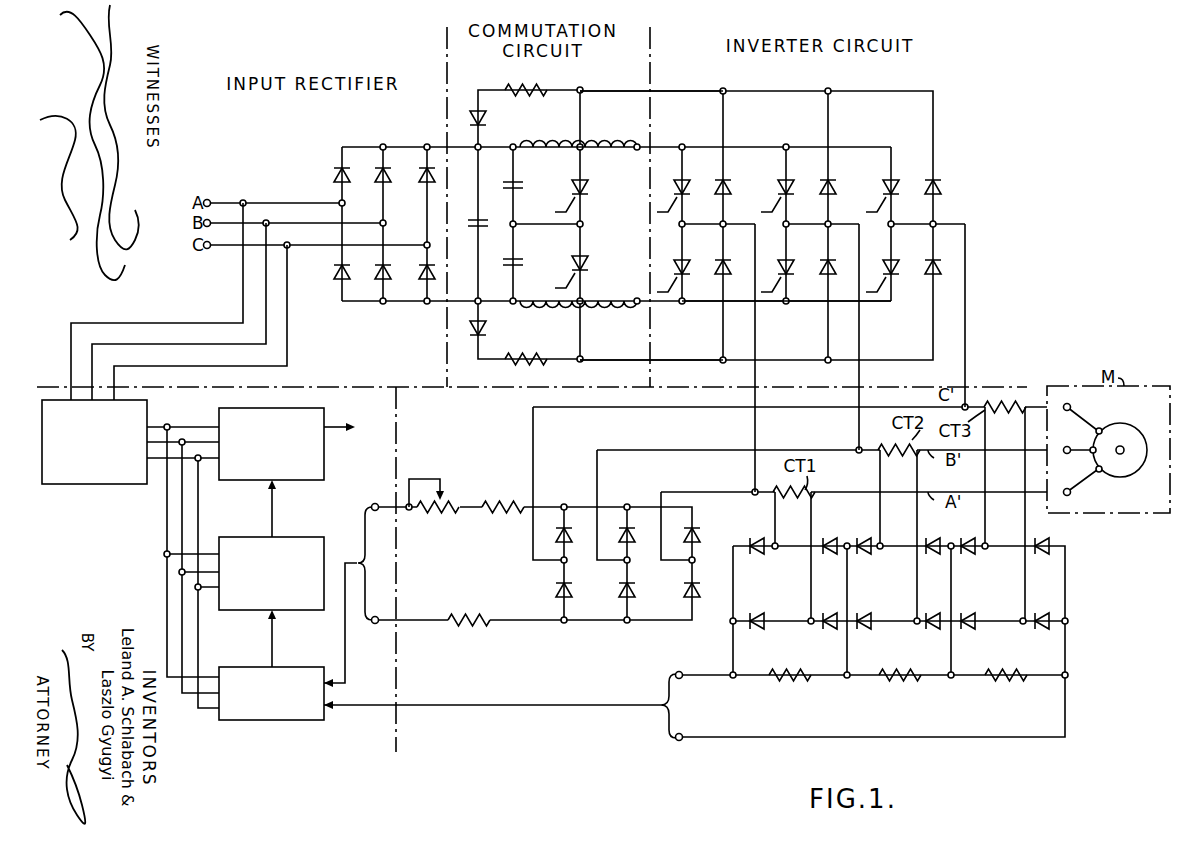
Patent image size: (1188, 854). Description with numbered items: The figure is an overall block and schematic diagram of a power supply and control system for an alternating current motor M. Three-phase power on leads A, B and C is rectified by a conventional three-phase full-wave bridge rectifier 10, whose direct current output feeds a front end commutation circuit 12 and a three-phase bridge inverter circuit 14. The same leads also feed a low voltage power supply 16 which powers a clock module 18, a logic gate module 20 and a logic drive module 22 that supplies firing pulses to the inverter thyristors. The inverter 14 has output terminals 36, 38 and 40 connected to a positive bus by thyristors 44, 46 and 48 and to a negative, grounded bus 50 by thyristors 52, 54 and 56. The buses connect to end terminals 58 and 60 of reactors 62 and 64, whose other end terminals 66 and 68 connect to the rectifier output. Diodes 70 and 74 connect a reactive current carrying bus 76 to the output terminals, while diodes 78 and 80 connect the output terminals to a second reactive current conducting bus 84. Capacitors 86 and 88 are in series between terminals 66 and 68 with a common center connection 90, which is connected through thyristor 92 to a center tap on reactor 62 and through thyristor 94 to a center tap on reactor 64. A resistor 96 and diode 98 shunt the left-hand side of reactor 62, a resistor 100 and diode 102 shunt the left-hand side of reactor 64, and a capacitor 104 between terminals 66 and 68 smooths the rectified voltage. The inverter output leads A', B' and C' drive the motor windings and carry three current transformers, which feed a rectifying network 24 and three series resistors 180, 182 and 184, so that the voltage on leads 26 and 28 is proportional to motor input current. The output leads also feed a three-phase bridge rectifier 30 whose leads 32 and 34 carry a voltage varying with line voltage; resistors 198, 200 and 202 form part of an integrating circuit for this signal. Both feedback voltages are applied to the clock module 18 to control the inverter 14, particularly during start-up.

The three-phase full-wave bridge rectifier 10 is at (383, 134).
The front end commutation circuit 12 is at (594, 78).
The three-phase bridge inverter circuit 14 is at (851, 78).
The low voltage power supply 16 is at (125, 485).
The clock module 18 is at (310, 667).
The logic gate module 20 is at (312, 537).
The logic drive module 22 is at (324, 409).
The rectifying network 24 is at (896, 594).
The lead 26 is at (704, 675).
The lead 28 is at (702, 747).
The three-phase bridge rectifier 30 is at (609, 611).
The lead 32 is at (380, 503).
The lead 34 is at (378, 626).
The output terminal 36 is at (723, 226).
The output terminal 38 is at (828, 225).
The output terminal 40 is at (935, 225).
The thyristor 44 is at (676, 187).
The thyristor 46 is at (779, 187).
The thyristor 48 is at (891, 185).
The negative grounded bus 50 is at (786, 304).
The thyristor 52 is at (940, 187).
The thyristor 54 is at (792, 275).
The thyristor 56 is at (892, 262).
The end terminal 58 is at (636, 151).
The end terminal 60 is at (637, 298).
The reactor 62 is at (620, 140).
The reactor 64 is at (596, 308).
The end terminal 66 is at (513, 150).
The end terminal 68 is at (514, 300).
The diode 70 is at (724, 276).
The diode 74 is at (938, 273).
The reactive current carrying bus 76 is at (678, 360).
The diode 78 is at (721, 180).
The diode 80 is at (836, 186).
The second reactive current conducting bus 84 is at (707, 90).
The capacitor 86 is at (522, 187).
The capacitor 88 is at (522, 262).
The common center connection 90 is at (514, 222).
The thyristor 92 is at (590, 189).
The thyristor 94 is at (590, 265).
The resistor 96 is at (544, 94).
The diode 98 is at (488, 120).
The resistor 100 is at (552, 358).
The diode 102 is at (486, 330).
The capacitor 104 is at (467, 210).
The resistor 180 is at (784, 682).
The resistor 182 is at (891, 682).
The resistor 184 is at (1001, 682).
The resistor 198 is at (425, 519).
The resistor 200 is at (522, 519).
The resistor 202 is at (491, 616).